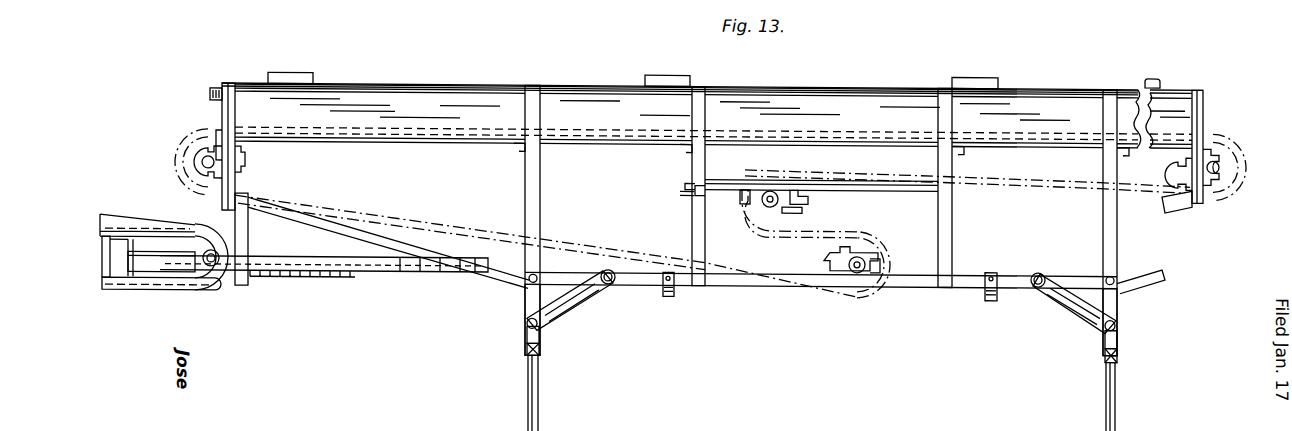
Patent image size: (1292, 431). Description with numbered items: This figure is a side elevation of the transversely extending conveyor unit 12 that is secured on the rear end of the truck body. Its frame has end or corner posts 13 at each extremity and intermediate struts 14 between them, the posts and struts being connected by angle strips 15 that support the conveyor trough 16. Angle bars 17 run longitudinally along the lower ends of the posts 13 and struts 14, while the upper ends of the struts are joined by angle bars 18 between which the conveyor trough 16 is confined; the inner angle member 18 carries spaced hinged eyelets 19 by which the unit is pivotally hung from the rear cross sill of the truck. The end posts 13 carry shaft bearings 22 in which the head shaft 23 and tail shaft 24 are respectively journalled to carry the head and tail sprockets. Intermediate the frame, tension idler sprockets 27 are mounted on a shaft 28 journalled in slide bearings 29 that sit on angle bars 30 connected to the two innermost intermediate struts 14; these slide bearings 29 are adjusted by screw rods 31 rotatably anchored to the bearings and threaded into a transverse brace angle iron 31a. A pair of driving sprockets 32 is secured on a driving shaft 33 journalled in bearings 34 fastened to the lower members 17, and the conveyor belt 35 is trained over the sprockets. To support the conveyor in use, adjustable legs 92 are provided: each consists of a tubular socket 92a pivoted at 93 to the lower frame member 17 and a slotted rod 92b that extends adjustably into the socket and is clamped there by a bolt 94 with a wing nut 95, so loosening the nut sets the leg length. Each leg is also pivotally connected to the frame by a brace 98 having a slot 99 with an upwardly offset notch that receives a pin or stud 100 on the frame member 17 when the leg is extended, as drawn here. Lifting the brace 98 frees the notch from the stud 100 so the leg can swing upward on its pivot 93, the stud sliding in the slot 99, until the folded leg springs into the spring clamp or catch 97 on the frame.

The conveyor unit 12 is at (400, 105).
The end or corner posts 13 is at (212, 92).
The intermediate struts 14 is at (525, 188).
The angle strips 15 is at (520, 144).
The conveyor trough 16 is at (835, 108).
The angle bars 17 is at (960, 283).
The angle bars 18 is at (905, 80).
The hinged eyelets 19 is at (300, 72).
The shaft bearings 22 is at (225, 145).
The head shaft 23 is at (1222, 150).
The tail shaft 24 is at (200, 163).
The tension idler sprockets 27 is at (800, 222).
The shaft 28 is at (775, 188).
The slide bearings 29 is at (798, 201).
The angle bars 30 is at (895, 186).
The screw rods 31 is at (720, 192).
The transverse brace angle iron 31a is at (690, 187).
The driving sprockets 32 is at (840, 236).
The driving shaft 33 is at (858, 286).
The bearings 34 is at (890, 258).
The conveyor belt 35 is at (1050, 186).
The adjustable legs 92 is at (526, 373).
The tubular socket 92a is at (526, 290).
The slotted rod 92b is at (540, 385).
The pivot 93 is at (538, 270).
The bolt 94 is at (526, 343).
The wing nut 95 is at (542, 345).
The spring clamp or catch 97 is at (678, 287).
The brace 98 is at (600, 279).
The slot 99 is at (565, 292).
The pins or studs 100 is at (608, 269).